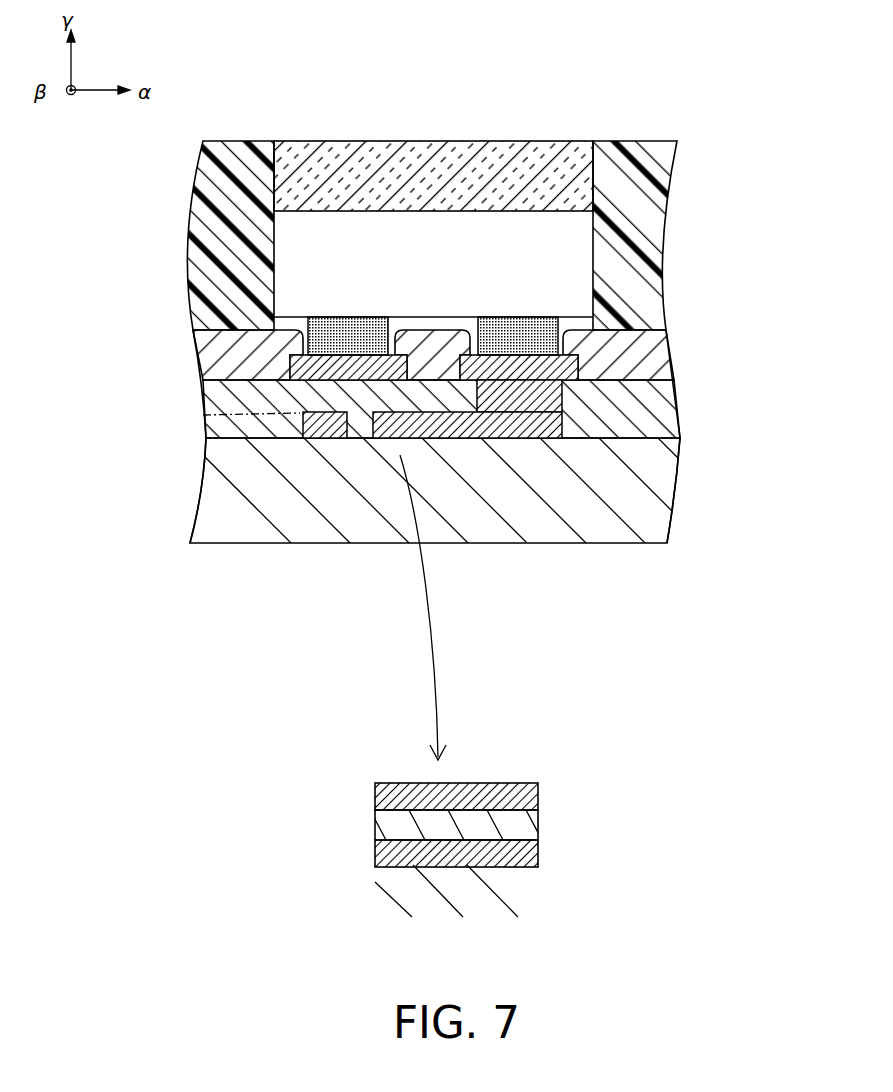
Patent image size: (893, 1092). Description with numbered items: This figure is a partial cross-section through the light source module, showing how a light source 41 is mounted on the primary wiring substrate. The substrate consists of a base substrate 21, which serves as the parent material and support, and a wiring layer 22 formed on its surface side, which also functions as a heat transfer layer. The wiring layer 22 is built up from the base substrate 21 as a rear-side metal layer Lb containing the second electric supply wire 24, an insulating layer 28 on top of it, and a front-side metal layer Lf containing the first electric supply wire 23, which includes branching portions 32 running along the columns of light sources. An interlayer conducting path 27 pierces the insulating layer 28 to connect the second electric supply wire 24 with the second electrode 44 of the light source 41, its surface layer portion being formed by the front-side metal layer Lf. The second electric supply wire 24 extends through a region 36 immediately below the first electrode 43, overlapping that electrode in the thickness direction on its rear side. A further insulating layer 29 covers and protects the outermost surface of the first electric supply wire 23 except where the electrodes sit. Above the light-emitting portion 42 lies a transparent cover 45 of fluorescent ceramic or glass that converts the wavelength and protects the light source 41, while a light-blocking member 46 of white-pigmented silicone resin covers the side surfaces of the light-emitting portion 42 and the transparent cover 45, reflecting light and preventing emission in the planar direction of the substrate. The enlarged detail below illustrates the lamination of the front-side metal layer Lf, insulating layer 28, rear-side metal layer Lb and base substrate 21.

The base substrate 21 is at (668, 497).
The wiring layer 22 is at (191, 345).
The first electric supply wire 23 is at (310, 380).
The second electric supply wire 24 is at (317, 438).
The interlayer conducting path 27 is at (575, 425).
The insulating layer 28 is at (667, 410).
The insulating layer 29 is at (666, 343).
The branching portion 32 is at (338, 382).
The region immediately below the first electrode 36 is at (203, 415).
The light source 41 is at (470, 212).
The light-emitting portion 42 is at (445, 279).
The first electrode 43 is at (340, 330).
The second electrode 44 is at (518, 330).
The transparent cover 45 is at (565, 152).
The light-blocking member 46 is at (668, 183).
The front-side metal layer Lf is at (538, 792).
The rear-side metal layer Lb is at (538, 857).